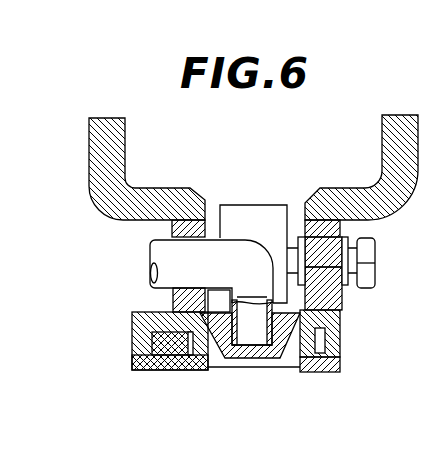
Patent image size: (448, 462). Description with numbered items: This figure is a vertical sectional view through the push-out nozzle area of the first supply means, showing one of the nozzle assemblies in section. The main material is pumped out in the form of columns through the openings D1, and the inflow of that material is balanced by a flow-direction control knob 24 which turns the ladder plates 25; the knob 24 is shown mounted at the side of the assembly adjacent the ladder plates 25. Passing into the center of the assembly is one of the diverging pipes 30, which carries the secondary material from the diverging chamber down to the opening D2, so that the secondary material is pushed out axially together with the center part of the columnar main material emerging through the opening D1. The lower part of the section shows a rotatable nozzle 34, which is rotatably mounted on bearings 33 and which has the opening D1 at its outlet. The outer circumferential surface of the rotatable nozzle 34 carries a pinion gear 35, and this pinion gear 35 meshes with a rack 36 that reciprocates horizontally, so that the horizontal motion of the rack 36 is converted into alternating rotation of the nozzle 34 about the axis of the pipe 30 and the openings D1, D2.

The flow-direction control knob 24 is at (363, 265).
The ladder plates 25 is at (247, 220).
The diverging pipes 30 is at (170, 255).
The bearings 33 is at (310, 370).
The rotatable nozzles 34 is at (342, 338).
The pinion gears 35 is at (188, 370).
The rack 36 is at (132, 337).
The openings D1 is at (288, 377).
The opening D2 is at (252, 322).